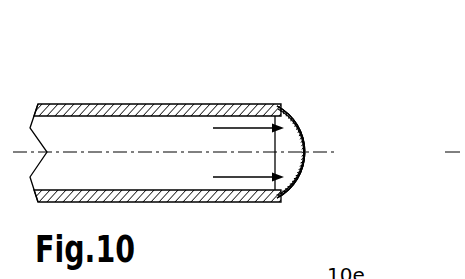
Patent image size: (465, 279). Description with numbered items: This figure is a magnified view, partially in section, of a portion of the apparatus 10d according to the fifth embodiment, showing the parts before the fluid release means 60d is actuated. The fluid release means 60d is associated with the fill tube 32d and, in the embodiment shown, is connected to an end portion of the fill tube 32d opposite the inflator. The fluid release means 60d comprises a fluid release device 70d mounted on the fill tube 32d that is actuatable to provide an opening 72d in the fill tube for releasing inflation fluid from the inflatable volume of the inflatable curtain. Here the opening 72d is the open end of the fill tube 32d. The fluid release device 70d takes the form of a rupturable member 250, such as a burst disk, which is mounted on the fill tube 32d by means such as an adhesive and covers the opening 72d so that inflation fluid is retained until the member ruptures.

The apparatus 10d is at (216, 111).
The fill tube 32d is at (142, 110).
The fluid release means 60d is at (297, 110).
The fluid release device 70d is at (317, 118).
The opening 72d is at (276, 144).
The rupturable member 250 is at (305, 163).